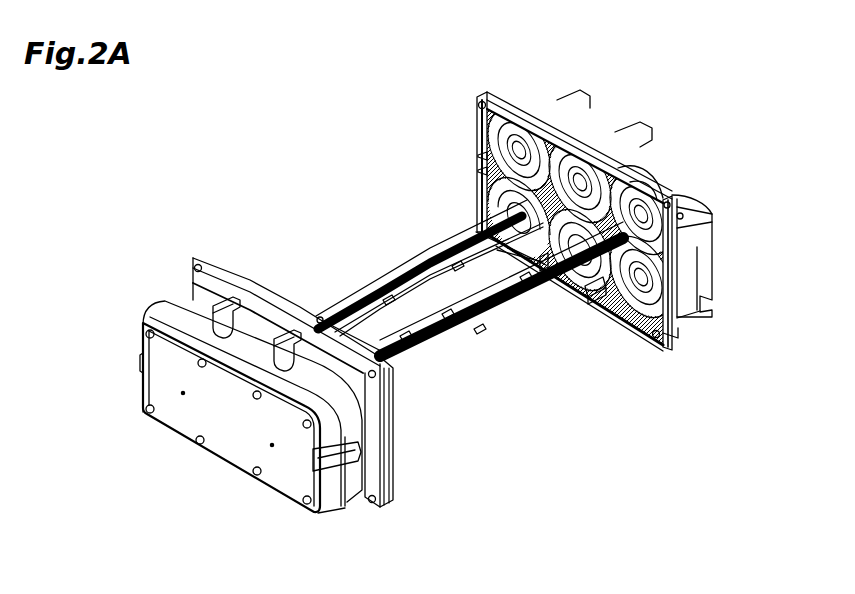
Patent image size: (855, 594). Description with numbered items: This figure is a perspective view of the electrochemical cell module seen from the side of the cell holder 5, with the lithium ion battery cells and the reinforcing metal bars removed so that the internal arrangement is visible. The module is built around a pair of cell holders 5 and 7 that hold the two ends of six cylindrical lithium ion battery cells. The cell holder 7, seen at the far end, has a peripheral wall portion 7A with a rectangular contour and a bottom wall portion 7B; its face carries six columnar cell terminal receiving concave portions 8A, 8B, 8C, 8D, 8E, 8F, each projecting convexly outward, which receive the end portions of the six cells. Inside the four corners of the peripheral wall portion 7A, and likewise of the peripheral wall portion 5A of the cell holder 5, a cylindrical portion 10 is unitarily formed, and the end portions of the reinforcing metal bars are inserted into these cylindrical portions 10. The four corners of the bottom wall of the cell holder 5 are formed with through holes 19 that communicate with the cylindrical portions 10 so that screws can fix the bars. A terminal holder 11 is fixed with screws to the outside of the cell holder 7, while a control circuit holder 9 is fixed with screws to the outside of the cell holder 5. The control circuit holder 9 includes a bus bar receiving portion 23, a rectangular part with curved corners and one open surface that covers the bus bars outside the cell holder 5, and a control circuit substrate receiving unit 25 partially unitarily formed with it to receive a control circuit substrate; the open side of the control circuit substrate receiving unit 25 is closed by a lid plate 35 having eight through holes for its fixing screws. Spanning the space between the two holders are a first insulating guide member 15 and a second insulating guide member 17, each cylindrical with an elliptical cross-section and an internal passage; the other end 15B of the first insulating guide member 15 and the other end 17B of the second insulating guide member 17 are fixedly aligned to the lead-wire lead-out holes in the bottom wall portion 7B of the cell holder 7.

The cell holder 5 is at (384, 487).
The peripheral wall portion 5A is at (240, 283).
The cell holder 7 is at (667, 328).
The peripheral wall portion 7A is at (503, 106).
The bottom wall portion 7B is at (653, 270).
The cell terminal receiving concave portion 8A is at (645, 215).
The cell terminal receiving concave portion 8B is at (590, 165).
The cell terminal receiving concave portion 8C is at (527, 125).
The cell terminal receiving concave portion 8D is at (487, 213).
The cell terminal receiving concave portion 8E is at (563, 275).
The cell terminal receiving concave portion 8F is at (668, 312).
The control circuit holder 9 is at (355, 468).
The cylindrical portion 10 is at (480, 104).
The terminal holder 11 is at (702, 232).
The first insulating guide member 15 is at (505, 320).
The other end of first insulating guide member 15B is at (597, 293).
The second insulating guide member 17 is at (410, 262).
The other end of second insulating guide member 17B is at (482, 172).
The through hole 19 is at (196, 266).
The bus bar receiving portion 23 is at (168, 307).
The control circuit substrate receiving unit 25 is at (143, 327).
The lid plate 35 is at (178, 438).